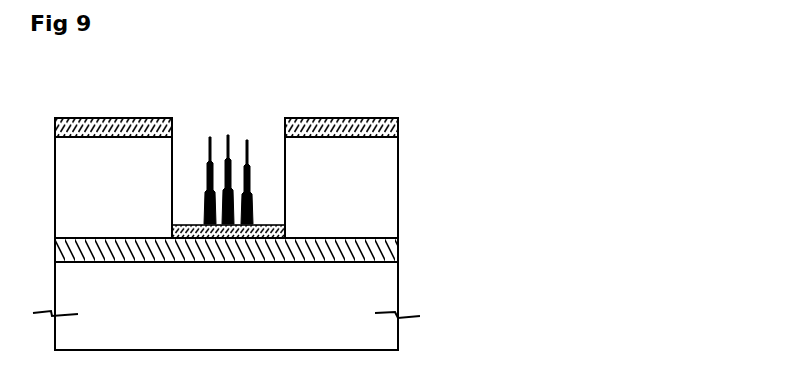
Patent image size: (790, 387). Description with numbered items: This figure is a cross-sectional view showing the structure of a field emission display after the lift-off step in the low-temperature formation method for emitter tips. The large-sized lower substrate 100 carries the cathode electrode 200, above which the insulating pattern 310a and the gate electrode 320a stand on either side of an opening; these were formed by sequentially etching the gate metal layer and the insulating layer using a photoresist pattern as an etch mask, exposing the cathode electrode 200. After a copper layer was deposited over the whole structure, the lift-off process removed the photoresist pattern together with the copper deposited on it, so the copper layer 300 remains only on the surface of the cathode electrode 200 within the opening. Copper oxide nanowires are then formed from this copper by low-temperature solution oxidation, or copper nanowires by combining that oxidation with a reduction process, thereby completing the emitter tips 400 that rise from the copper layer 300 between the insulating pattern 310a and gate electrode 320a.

The lower substrate 100 is at (398, 287).
The cathode electrode 200 is at (398, 252).
The copper layer 300 is at (285, 237).
The insulating pattern 310a is at (392, 183).
The gate electrode 320a is at (398, 130).
The emitter tips 400 is at (229, 142).